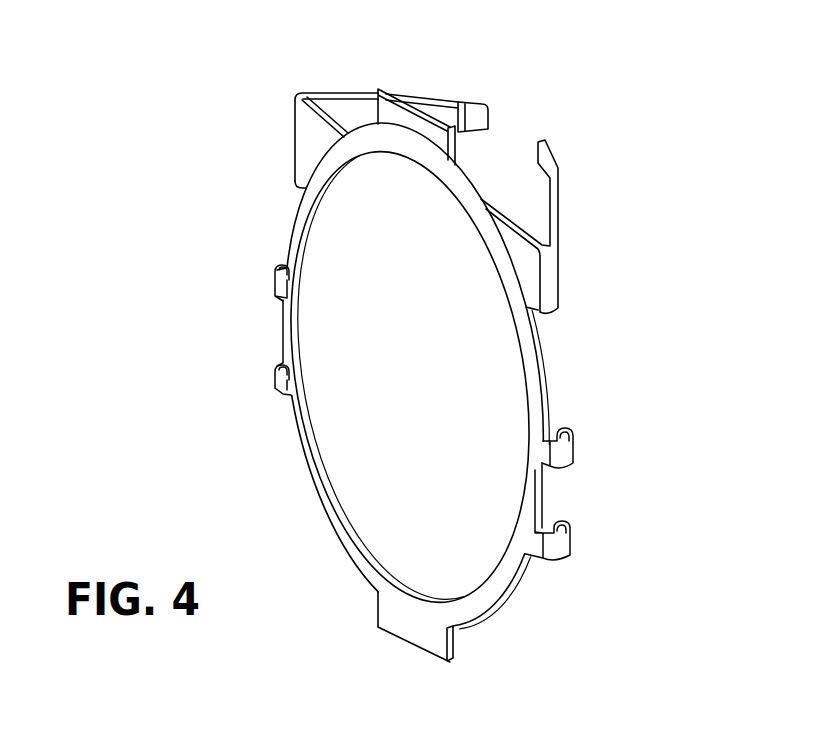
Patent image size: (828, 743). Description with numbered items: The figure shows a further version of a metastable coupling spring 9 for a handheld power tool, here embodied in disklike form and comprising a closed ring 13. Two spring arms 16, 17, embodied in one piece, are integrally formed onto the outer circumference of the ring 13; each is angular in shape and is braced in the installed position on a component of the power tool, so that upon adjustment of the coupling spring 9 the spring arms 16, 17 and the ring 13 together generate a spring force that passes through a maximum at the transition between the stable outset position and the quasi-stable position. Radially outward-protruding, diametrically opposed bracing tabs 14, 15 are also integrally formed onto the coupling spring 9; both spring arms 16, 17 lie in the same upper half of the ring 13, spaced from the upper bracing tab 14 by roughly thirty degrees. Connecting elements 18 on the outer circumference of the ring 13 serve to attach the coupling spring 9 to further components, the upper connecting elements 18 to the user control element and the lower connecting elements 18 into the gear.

The coupling spring 9 is at (633, 313).
The ring 13 is at (530, 375).
The upper bracing tab 14 is at (412, 115).
The lower bracing tab 15 is at (407, 630).
The spring arm 16 is at (560, 205).
The spring arm 17 is at (336, 104).
The connecting elements 18 is at (277, 383).